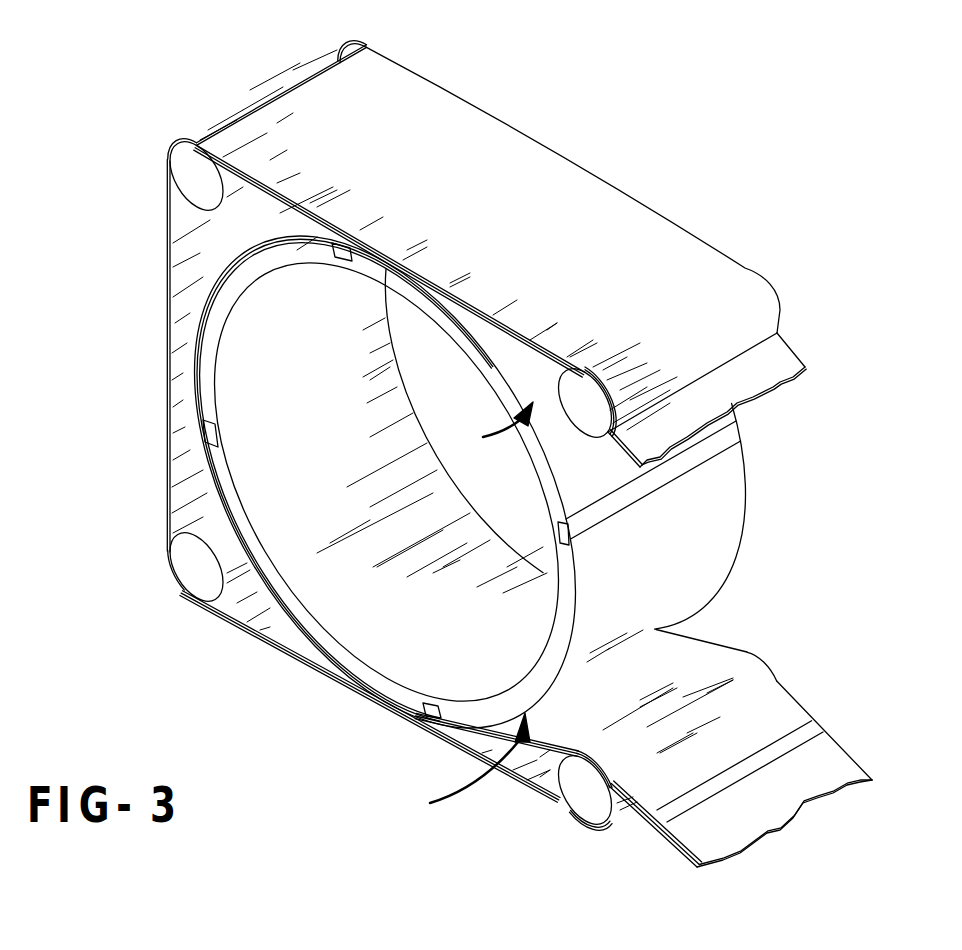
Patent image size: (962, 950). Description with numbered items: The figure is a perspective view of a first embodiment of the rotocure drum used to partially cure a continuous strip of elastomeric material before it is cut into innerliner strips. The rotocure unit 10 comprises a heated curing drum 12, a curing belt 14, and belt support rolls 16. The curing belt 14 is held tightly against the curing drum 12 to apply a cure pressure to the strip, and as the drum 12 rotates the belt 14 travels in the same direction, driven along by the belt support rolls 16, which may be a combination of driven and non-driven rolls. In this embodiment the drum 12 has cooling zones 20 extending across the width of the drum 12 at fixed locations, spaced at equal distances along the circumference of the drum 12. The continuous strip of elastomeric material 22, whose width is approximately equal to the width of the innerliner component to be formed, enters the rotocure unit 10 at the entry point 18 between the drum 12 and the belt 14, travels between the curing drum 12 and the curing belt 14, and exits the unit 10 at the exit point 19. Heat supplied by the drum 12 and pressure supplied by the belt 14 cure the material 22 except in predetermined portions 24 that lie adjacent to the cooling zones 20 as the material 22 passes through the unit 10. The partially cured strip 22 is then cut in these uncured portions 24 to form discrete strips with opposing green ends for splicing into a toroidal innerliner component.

The rotocure unit 10 is at (828, 214).
The heated curing drum 12 is at (722, 532).
The curing belt 14 is at (527, 182).
The belt support rolls 16 is at (190, 174).
The first opening 18 is at (489, 427).
The second opening 19 is at (462, 766).
The cooling zones 20 is at (341, 253).
The continuous strip of elastomeric material 22 is at (768, 372).
The predetermined uncured portions 24 is at (806, 735).